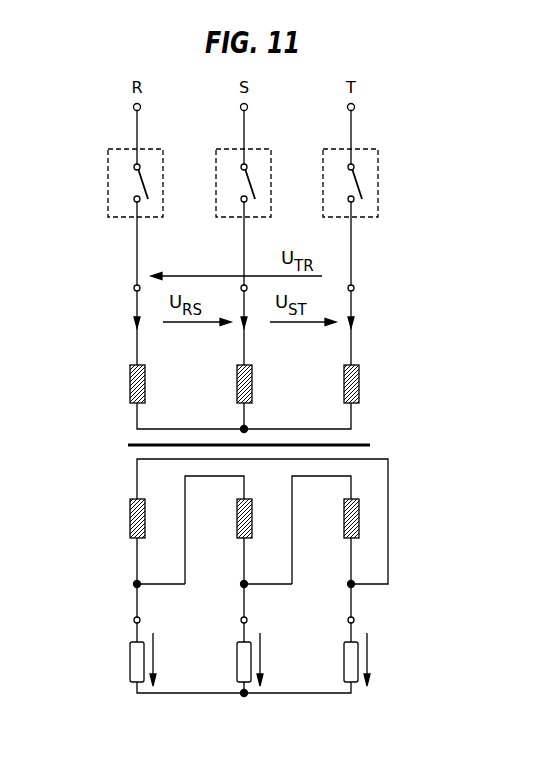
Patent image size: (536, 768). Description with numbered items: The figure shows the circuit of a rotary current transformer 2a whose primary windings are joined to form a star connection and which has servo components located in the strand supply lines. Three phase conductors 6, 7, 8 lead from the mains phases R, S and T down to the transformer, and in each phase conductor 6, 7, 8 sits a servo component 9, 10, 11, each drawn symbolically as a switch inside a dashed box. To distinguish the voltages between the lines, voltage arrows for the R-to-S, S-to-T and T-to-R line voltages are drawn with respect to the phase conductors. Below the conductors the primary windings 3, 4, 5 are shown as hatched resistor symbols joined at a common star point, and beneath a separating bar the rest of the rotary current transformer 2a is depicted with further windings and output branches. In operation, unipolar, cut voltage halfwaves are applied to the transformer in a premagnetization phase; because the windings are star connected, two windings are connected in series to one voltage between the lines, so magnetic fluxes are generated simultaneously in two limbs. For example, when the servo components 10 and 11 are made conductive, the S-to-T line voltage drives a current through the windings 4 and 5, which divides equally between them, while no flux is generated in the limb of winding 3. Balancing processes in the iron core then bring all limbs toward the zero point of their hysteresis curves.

The rotary current transformer 2a is at (112, 475).
The winding 3 is at (130, 389).
The winding 4 is at (237, 389).
The winding 5 is at (344, 389).
The phase conductor 6 is at (137, 253).
The phase conductor 7 is at (244, 253).
The phase conductor 8 is at (351, 253).
The servo component 9 is at (108, 198).
The servo component 10 is at (216, 198).
The servo component 11 is at (323, 198).